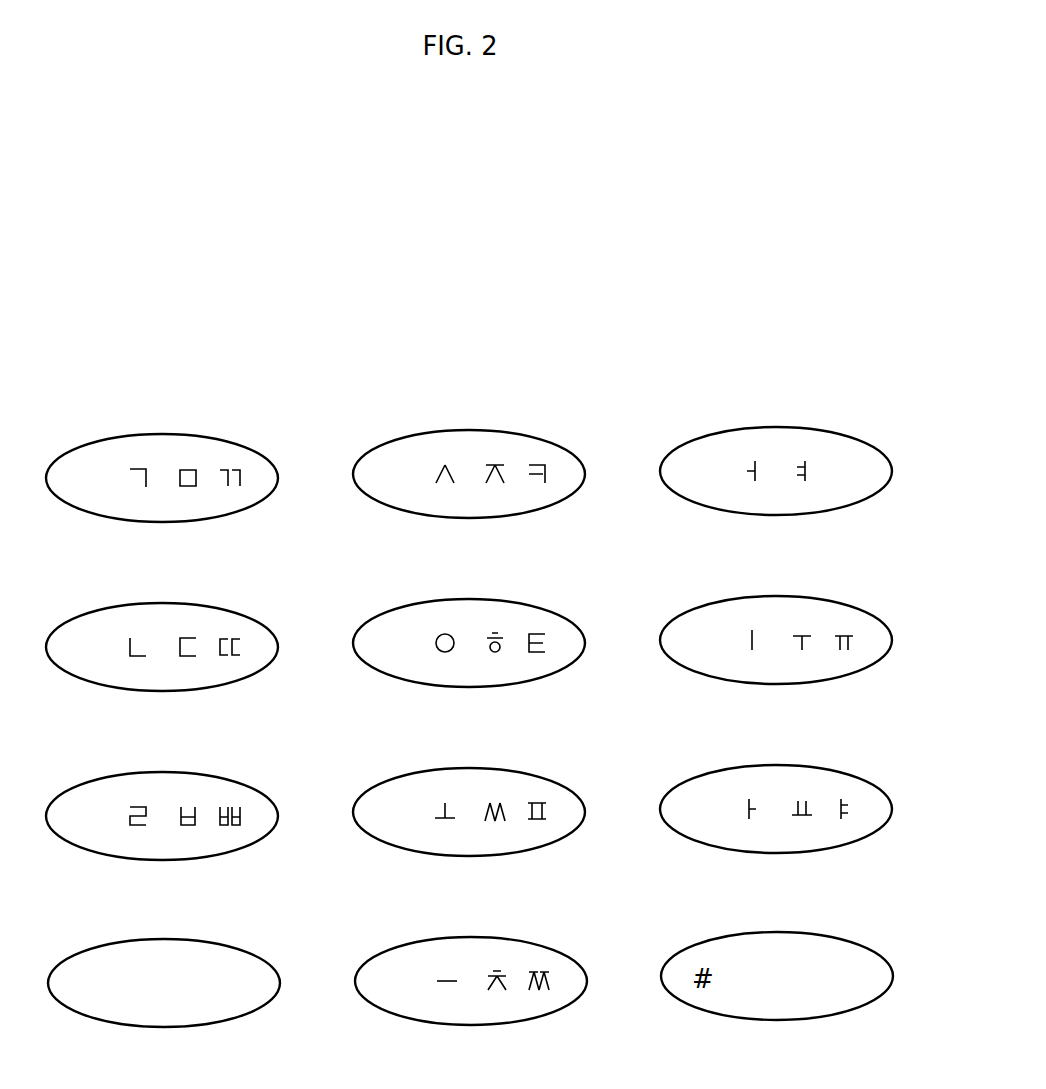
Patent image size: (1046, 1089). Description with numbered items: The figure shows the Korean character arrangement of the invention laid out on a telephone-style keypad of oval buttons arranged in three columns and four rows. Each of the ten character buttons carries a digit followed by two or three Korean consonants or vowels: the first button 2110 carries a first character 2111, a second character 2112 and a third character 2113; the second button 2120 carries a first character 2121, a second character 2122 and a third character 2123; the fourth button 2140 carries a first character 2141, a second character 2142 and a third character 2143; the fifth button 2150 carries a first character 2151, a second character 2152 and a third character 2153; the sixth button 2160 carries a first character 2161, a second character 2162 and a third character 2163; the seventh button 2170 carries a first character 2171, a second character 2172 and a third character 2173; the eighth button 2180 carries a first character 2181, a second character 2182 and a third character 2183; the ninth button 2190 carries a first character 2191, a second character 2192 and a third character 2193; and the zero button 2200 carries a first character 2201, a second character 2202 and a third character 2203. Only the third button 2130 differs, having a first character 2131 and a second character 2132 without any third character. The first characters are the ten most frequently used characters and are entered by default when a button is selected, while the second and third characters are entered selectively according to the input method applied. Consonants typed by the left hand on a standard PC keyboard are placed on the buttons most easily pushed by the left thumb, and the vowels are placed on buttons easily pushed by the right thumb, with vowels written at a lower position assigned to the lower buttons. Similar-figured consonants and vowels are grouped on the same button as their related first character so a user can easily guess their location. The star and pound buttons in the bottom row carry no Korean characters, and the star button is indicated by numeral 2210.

The button 1 2110 is at (271, 467).
The first character 2111 is at (133, 457).
The second character 2112 is at (194, 460).
The third character 2113 is at (234, 460).
The button 2 2120 is at (578, 463).
The first character 2121 is at (440, 453).
The second character 2122 is at (501, 456).
The third character 2123 is at (541, 456).
The button 3 2130 is at (885, 460).
The first character 2131 is at (747, 450).
The second character 2132 is at (808, 453).
The button 4 2140 is at (271, 636).
The first character 2141 is at (133, 626).
The second character 2142 is at (194, 629).
The third character 2143 is at (234, 629).
The button 5 2150 is at (578, 632).
The first character 2151 is at (440, 622).
The second character 2152 is at (501, 625).
The third character 2153 is at (541, 625).
The button 6 2160 is at (885, 629).
The first character 2161 is at (747, 619).
The second character 2162 is at (808, 622).
The third character 2163 is at (848, 622).
The button 7 2170 is at (271, 805).
The first character 2171 is at (133, 795).
The second character 2172 is at (194, 798).
The third character 2173 is at (234, 798).
The button 8 2180 is at (578, 801).
The first character 2181 is at (440, 791).
The second character 2182 is at (501, 794).
The third character 2183 is at (541, 794).
The button 9 2190 is at (885, 798).
The first character 2191 is at (747, 788).
The second character 2192 is at (808, 791).
The third character 2193 is at (848, 791).
The button 0 2200 is at (580, 970).
The first character 2201 is at (442, 960).
The second character 2202 is at (503, 963).
The third character 2203 is at (543, 963).
The key * 2210 is at (276, 972).